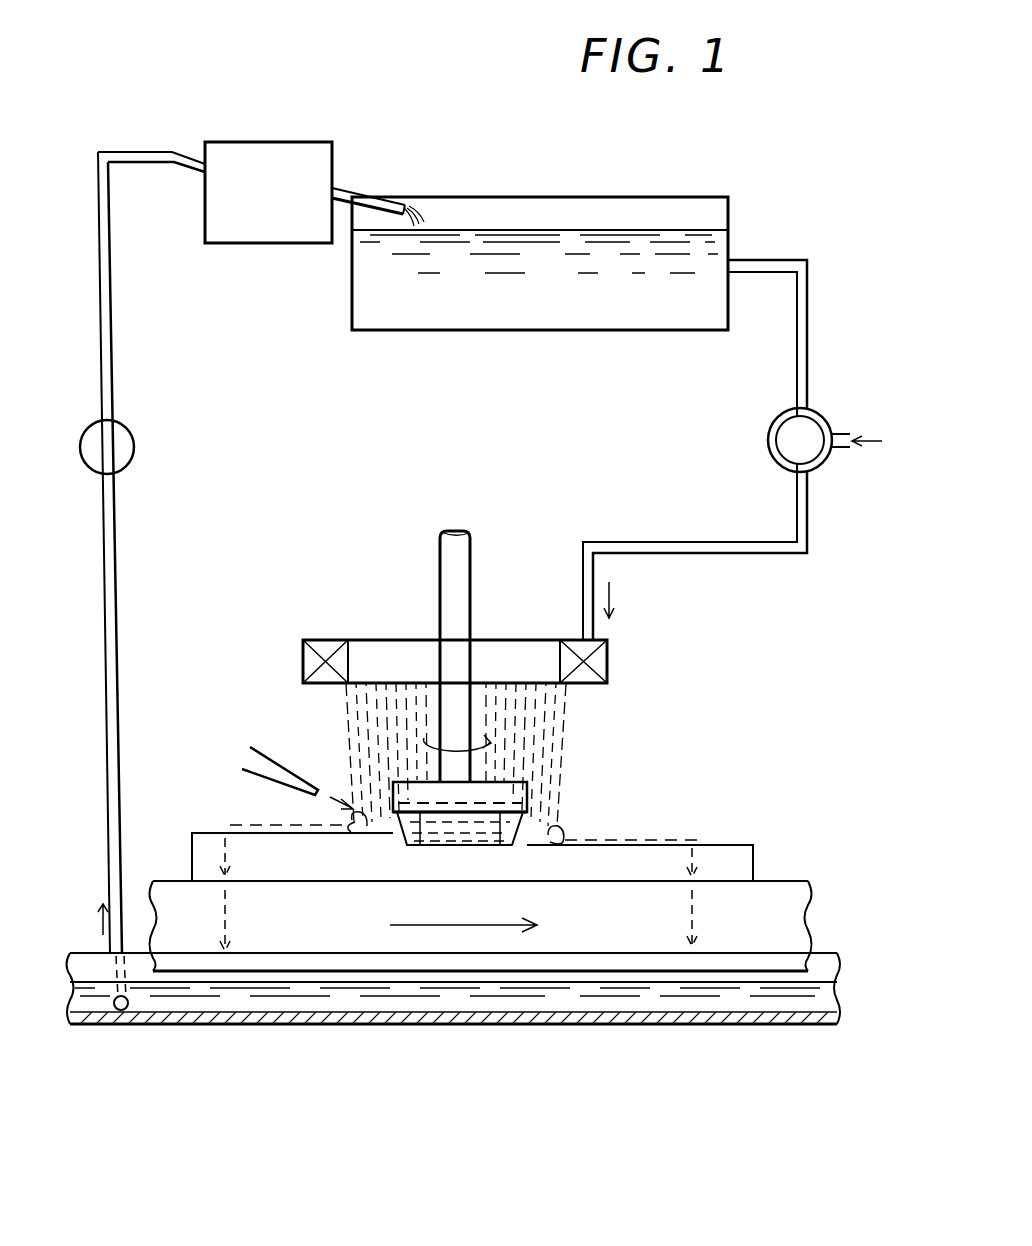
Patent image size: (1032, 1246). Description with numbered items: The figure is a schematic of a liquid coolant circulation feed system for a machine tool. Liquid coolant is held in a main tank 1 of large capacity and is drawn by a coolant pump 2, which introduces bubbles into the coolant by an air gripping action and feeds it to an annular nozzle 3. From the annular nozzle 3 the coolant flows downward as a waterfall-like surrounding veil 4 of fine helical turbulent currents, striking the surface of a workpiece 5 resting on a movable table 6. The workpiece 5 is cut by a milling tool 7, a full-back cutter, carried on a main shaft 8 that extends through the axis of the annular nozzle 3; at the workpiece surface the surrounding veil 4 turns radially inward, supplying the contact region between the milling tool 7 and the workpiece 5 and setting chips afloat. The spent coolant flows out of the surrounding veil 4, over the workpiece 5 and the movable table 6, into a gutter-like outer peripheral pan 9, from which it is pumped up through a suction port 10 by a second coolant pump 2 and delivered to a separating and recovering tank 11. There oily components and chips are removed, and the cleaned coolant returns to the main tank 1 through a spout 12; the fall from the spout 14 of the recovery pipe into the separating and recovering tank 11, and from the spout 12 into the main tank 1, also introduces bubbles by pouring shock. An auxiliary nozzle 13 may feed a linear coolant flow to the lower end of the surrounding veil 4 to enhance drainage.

The main tank 1 is at (434, 342).
The coolant pump 2 is at (134, 447).
The annular nozzle 3 is at (609, 656).
The surrounding veil 4 is at (568, 742).
The workpiece 5 is at (722, 845).
The movable table 6 is at (762, 938).
The milling tool 7 is at (418, 780).
The main shaft 8 is at (440, 572).
The outer peripheral pan 9 is at (346, 1026).
The suction port 10 is at (118, 1012).
The separating and recovering tank 11 is at (290, 256).
The spout 12 is at (366, 193).
The auxiliary nozzle 13 is at (268, 780).
The spout of the recovery pipe 14 is at (190, 153).